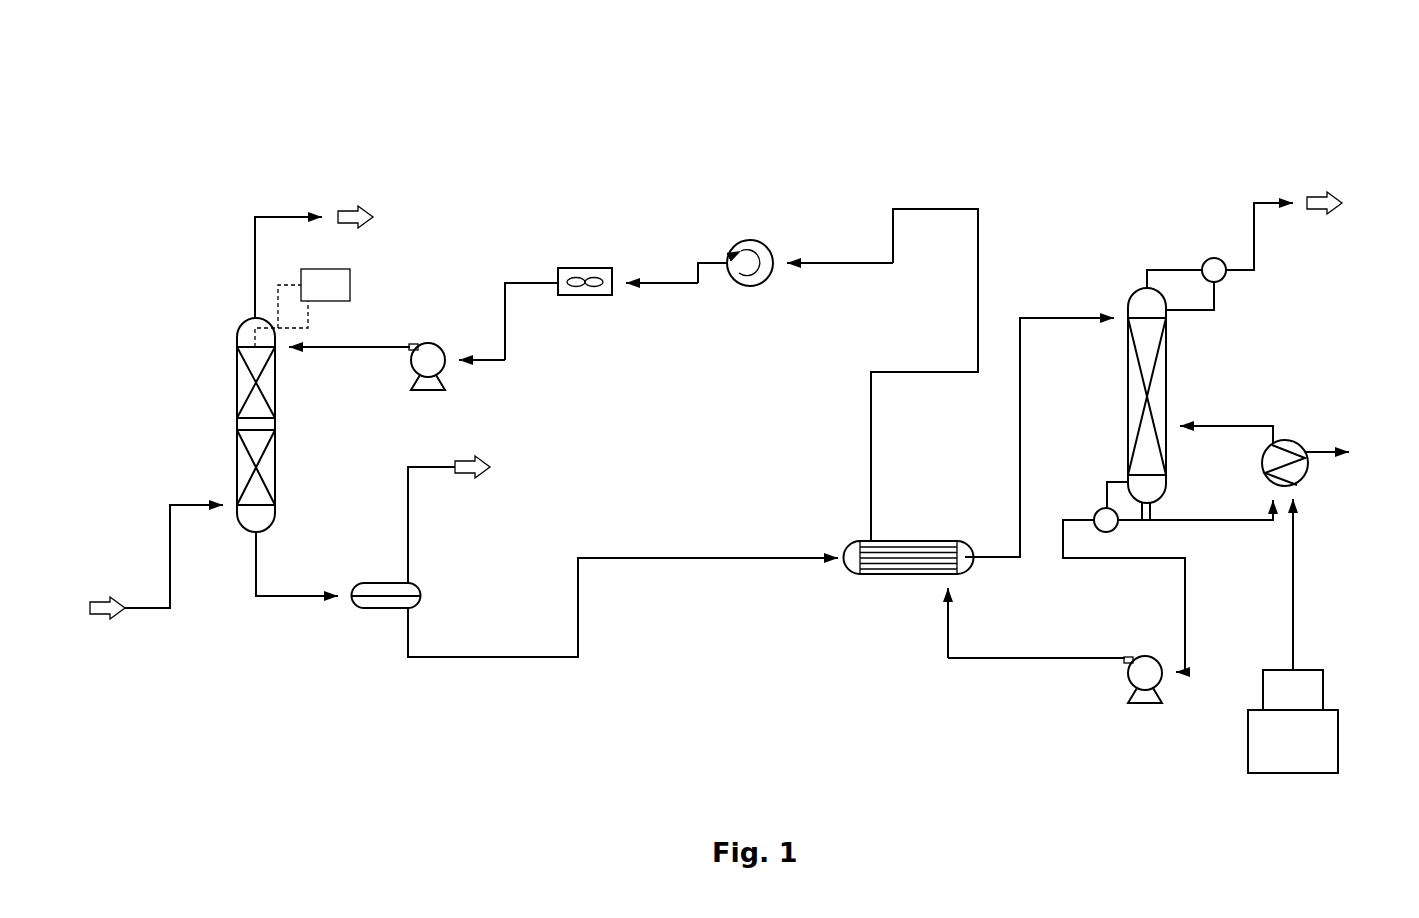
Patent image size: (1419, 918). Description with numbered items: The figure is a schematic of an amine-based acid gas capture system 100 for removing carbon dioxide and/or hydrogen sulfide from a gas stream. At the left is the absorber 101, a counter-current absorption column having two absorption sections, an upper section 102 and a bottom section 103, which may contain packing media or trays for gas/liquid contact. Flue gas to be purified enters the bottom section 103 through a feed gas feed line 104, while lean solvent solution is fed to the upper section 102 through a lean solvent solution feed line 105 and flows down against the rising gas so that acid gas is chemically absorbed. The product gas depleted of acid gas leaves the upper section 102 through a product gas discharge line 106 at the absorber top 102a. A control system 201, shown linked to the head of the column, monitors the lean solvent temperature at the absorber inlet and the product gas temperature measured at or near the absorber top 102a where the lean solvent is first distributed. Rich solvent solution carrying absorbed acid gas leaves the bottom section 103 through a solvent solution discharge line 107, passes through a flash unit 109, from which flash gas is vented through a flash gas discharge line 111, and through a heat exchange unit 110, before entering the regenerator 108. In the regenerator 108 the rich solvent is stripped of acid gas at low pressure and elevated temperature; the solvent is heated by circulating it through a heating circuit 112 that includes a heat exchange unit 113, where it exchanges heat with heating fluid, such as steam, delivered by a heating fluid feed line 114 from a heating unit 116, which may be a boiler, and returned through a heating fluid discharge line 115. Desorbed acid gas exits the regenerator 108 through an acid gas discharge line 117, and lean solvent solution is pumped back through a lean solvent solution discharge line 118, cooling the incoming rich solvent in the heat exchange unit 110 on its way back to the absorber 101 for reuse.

The acid gas capture system 100 is at (249, 66).
The absorber 101 is at (221, 408).
The upper section 102 is at (237, 372).
The absorber top 102a is at (250, 321).
The bottom section 103 is at (237, 458).
The feed gas feed line 104 is at (170, 595).
The lean solvent solution feed line 105 is at (380, 347).
The product gas discharge line 106 is at (255, 232).
The solvent solution discharge line 107 is at (257, 565).
The regenerator 108 is at (1128, 378).
The flash unit 109 is at (420, 587).
The heat exchange unit 110 is at (912, 540).
The flash gas discharge line 111 is at (408, 497).
The heating circuit 112 is at (1207, 522).
The heat exchange unit 113 is at (1290, 443).
The heating fluid feed line 114 is at (1293, 580).
The heating fluid discharge line 115 is at (1328, 453).
The heating unit 116 is at (1328, 745).
The acid gas discharge line 117 is at (1254, 240).
The lean solvent solution discharge line 118 is at (1088, 560).
The control system 201 is at (326, 286).